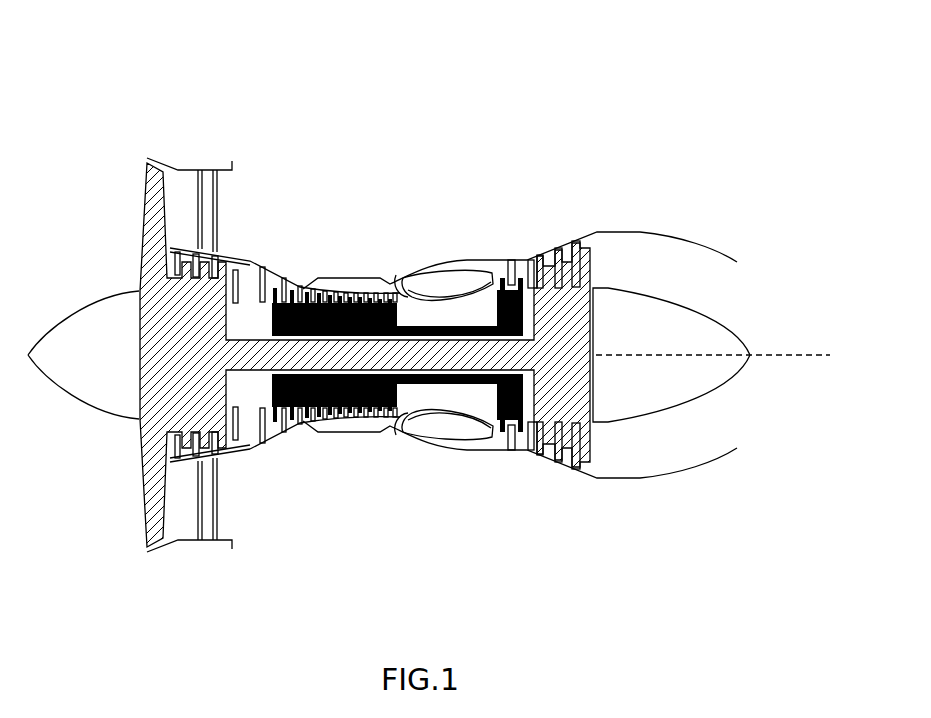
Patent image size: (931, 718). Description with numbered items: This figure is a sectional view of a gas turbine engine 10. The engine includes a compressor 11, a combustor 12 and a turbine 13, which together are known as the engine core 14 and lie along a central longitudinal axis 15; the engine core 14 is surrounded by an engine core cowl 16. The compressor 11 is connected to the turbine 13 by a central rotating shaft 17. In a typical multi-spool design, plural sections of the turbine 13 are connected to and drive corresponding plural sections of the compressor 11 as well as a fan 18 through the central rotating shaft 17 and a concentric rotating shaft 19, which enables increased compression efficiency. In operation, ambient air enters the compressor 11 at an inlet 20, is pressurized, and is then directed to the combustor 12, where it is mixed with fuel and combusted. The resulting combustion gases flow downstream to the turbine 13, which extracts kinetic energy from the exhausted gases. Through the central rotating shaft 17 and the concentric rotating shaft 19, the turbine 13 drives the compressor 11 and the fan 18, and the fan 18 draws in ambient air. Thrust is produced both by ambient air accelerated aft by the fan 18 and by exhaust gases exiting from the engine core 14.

The gas turbine engine 10 is at (240, 105).
The compressor 11 is at (297, 287).
The combustor 12 is at (443, 290).
The turbine 13 is at (543, 253).
The engine core 14 is at (519, 462).
The central longitudinal axis 15 is at (777, 357).
The engine core cowl 16 is at (313, 432).
The central rotating shaft 17 is at (237, 373).
The fan 18 is at (152, 243).
The concentric rotating shaft 19 is at (447, 375).
The inlet 20 is at (172, 455).